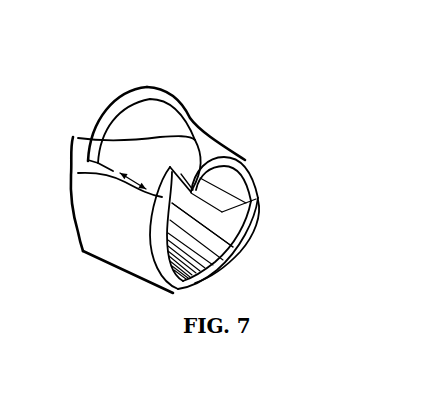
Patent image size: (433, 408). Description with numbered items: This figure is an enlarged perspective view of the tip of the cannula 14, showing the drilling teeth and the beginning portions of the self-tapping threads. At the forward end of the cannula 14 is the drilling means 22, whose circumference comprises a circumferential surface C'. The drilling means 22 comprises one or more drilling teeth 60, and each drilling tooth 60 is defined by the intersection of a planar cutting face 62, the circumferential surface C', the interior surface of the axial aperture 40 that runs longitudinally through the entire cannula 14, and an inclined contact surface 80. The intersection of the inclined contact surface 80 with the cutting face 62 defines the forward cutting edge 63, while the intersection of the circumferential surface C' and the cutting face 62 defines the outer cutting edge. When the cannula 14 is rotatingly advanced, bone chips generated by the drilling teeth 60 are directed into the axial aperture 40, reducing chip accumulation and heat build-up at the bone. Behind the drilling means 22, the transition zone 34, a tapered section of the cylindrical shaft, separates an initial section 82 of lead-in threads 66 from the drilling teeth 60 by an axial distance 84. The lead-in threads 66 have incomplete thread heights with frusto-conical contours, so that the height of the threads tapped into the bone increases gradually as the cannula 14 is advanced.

The cannula 14 is at (241, 88).
The drilling means 22 is at (266, 308).
The transition zone 34 is at (80, 251).
The axial aperture 40 is at (226, 249).
The drilling tooth 60 is at (256, 244).
The cutting face 62 is at (80, 173).
The forward cutting edge 63 is at (80, 138).
The lead-in threads 66 is at (153, 85).
The inclined contact surface 80 is at (235, 168).
The initial section 82 is at (110, 106).
The axial distance 84 is at (137, 172).
The circumferential surface C' is at (196, 123).